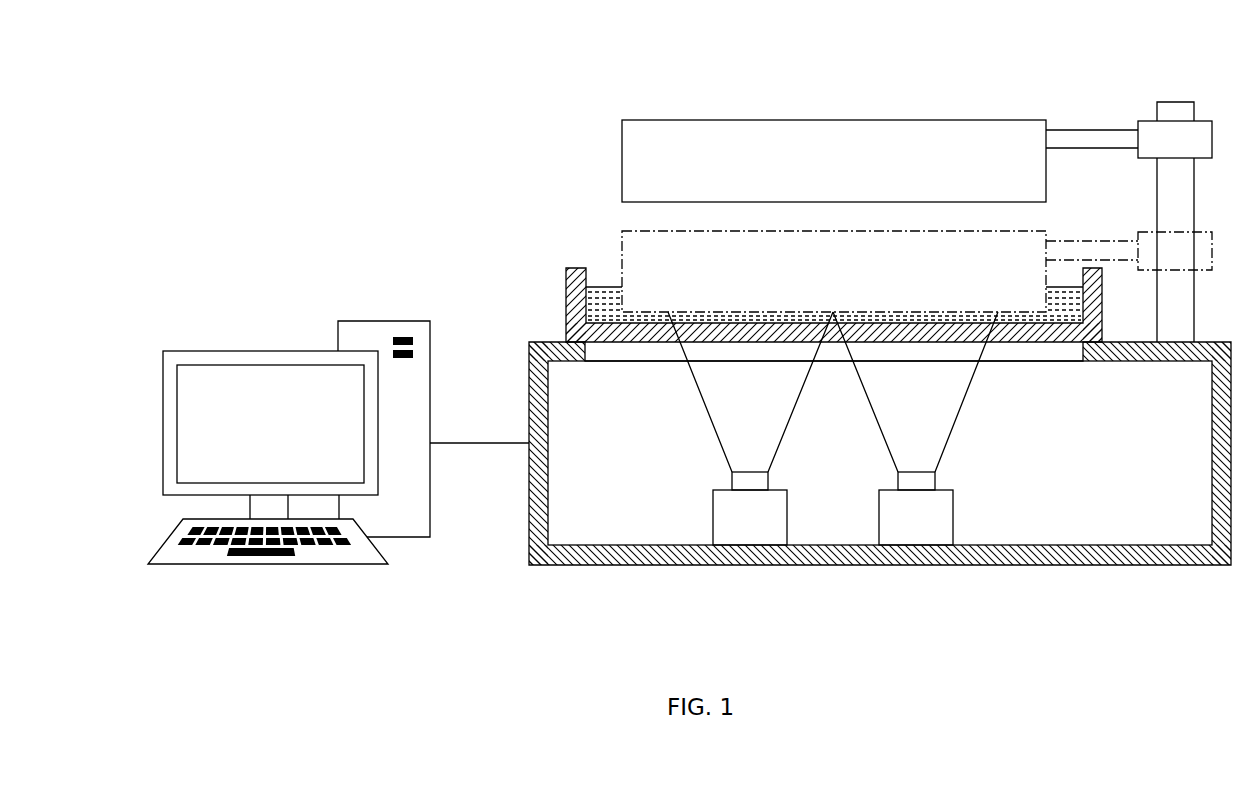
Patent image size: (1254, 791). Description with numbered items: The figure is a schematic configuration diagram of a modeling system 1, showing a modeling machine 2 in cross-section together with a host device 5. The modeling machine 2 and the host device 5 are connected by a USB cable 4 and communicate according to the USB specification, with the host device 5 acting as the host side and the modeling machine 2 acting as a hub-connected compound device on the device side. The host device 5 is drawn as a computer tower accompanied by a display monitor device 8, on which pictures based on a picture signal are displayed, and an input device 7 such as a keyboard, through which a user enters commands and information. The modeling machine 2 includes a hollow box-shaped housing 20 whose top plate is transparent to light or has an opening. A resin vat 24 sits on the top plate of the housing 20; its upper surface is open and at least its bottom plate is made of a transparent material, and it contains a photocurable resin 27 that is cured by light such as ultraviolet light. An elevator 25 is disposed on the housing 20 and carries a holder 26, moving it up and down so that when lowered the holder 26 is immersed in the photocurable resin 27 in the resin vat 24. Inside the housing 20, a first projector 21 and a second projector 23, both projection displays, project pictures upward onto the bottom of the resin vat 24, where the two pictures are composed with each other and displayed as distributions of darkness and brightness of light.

The modeling system 1 is at (298, 100).
The modeling machine 2 is at (776, 92).
The USB cable 4 is at (481, 440).
The host device 5 is at (383, 328).
The input device 7 is at (349, 552).
The display monitor device 8 is at (240, 372).
The housing 20 is at (597, 550).
The first projector 21 is at (752, 529).
The second projector 23 is at (922, 530).
The resin vat 24 is at (568, 305).
The elevator 25 is at (1197, 135).
The holder 26 is at (855, 138).
The photocurable resin 27 is at (606, 295).